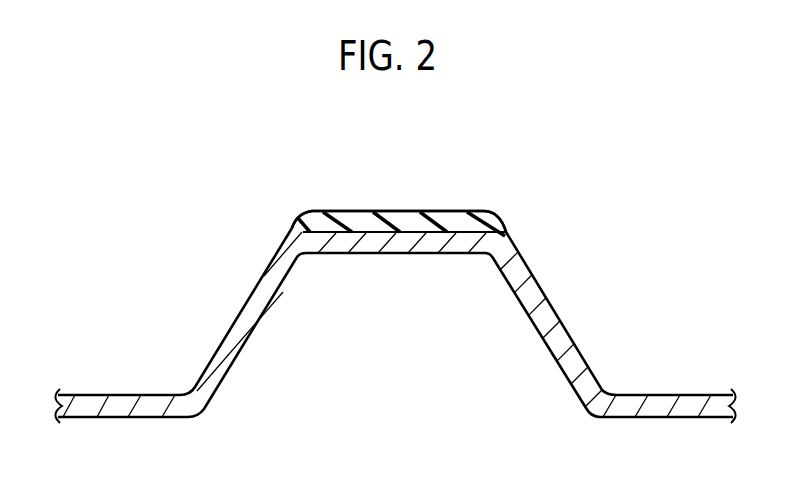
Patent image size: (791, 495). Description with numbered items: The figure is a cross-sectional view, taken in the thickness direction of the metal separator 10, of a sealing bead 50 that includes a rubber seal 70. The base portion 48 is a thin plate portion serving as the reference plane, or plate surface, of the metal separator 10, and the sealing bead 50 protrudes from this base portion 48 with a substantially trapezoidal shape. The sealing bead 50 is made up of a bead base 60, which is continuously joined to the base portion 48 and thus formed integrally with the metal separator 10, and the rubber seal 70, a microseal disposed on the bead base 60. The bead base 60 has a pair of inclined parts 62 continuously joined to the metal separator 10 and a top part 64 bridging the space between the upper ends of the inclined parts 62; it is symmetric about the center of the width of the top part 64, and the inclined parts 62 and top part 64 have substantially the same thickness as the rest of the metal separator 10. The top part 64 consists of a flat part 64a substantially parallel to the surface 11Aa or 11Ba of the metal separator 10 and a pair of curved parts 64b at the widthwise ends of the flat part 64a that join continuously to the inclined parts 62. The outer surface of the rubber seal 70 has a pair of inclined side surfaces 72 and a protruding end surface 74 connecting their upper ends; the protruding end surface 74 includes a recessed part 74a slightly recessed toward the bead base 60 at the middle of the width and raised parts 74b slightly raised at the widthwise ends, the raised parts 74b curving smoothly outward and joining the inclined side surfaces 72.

The metal separator 10 is at (132, 238).
The surface of the metal separator 11Aa is at (122, 393).
The surface of the metal separator 11Ba is at (102, 379).
The base portion 48 is at (115, 408).
The sealing bead 50 is at (237, 285).
The bead base 60 is at (557, 303).
The inclined parts 62 is at (227, 357).
The top part 64 is at (489, 313).
The flat part 64a is at (400, 244).
The curved parts 64b is at (302, 246).
The rubber seal 70 is at (503, 208).
The inclined side surfaces 72 is at (507, 235).
The protruding end surface 74 is at (403, 153).
The recessed part 74a is at (388, 213).
The raised parts 74b is at (313, 210).